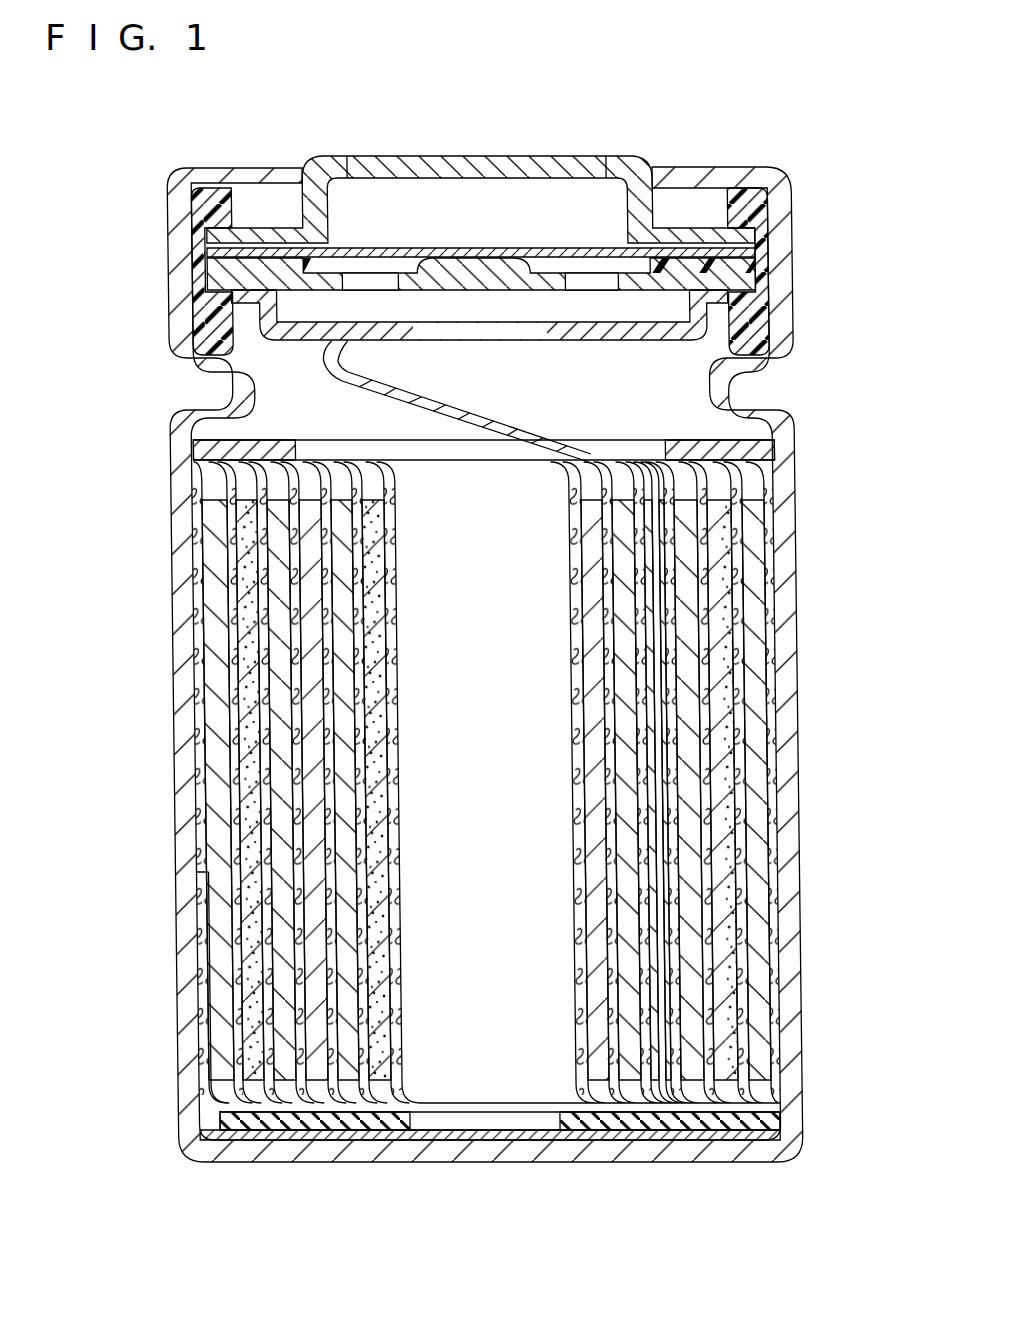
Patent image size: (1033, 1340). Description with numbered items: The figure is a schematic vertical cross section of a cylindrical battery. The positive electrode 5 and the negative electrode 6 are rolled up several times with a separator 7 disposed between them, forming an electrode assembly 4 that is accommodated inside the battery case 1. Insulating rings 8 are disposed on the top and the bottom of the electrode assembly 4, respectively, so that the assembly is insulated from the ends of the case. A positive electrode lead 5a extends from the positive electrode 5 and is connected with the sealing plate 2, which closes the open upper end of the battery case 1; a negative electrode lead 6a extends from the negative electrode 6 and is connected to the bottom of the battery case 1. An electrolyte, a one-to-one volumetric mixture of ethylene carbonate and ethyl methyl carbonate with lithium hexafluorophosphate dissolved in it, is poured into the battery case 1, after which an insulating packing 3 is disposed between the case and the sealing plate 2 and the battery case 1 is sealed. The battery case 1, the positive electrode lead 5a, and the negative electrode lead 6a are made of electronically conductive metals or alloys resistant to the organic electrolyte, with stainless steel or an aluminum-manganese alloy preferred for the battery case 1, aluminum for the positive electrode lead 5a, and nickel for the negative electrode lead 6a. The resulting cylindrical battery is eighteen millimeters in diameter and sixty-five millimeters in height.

The battery case 1 is at (178, 635).
The sealing plate 2 is at (388, 168).
The insulating packing 3 is at (762, 252).
The electrode assembly 4 is at (558, 782).
The positive electrode 5 is at (875, 655).
The positive electrode lead 5a is at (532, 432).
The negative electrode 6 is at (753, 823).
The negative electrode lead 6a is at (543, 1136).
The separator 7 is at (772, 700).
The insulating ring 8 is at (772, 452).